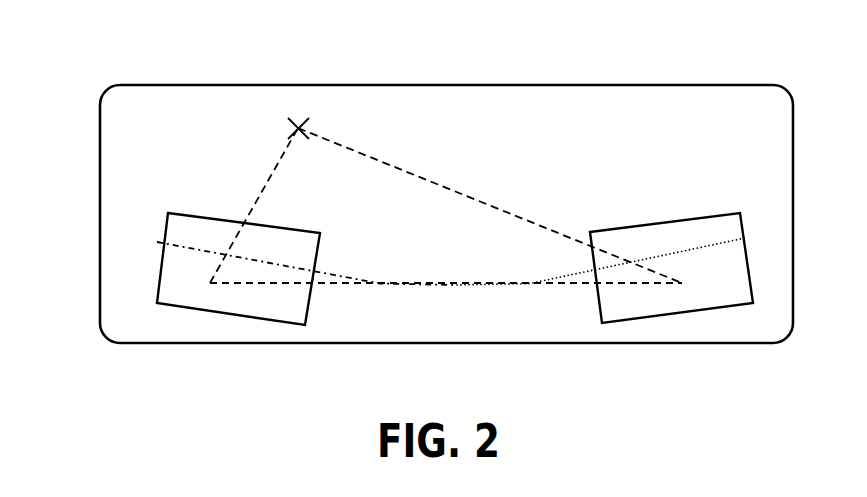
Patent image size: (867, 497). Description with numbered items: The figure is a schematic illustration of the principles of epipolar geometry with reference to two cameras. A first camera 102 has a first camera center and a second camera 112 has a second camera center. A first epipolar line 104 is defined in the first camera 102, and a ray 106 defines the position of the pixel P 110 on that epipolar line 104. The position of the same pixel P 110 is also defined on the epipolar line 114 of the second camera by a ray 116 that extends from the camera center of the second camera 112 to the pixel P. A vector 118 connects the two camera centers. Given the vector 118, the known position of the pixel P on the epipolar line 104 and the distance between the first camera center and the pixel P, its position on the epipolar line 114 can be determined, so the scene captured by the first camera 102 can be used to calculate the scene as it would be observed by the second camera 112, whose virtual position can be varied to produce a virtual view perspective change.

The first camera 102 is at (227, 315).
The first epipolar line 104 is at (195, 250).
The ray 106 is at (263, 187).
The pixel P 110 is at (299, 126).
The second camera 112 is at (665, 318).
The epipolar line 114 is at (718, 243).
The ray 116 is at (472, 200).
The vector 118 is at (448, 283).